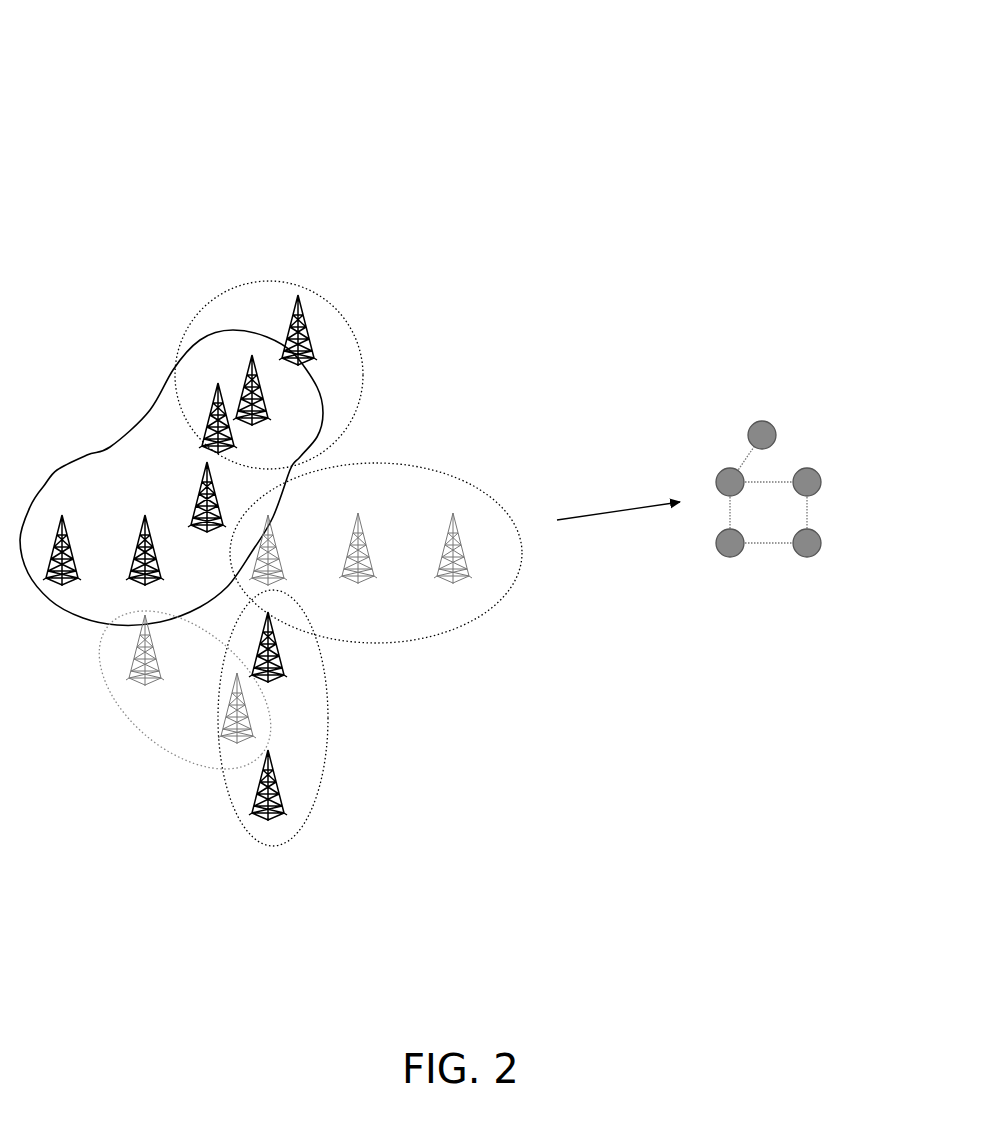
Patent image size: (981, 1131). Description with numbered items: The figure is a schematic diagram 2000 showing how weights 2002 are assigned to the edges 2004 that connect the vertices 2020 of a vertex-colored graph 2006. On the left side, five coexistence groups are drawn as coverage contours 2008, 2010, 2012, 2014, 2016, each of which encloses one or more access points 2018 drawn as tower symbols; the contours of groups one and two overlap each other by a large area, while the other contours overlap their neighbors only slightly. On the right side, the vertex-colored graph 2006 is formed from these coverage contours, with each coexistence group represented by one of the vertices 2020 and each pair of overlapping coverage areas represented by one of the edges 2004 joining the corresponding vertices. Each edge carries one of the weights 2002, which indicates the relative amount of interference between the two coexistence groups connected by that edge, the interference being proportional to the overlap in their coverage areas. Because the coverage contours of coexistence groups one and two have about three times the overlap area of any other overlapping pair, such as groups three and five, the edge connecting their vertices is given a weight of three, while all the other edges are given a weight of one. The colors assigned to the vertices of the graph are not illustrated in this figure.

The schematic diagram 2000 is at (158, 77).
The weights 2002 is at (725, 448).
The edges 2004 is at (757, 545).
The vertex-colored graph 2006 is at (783, 377).
The coverage contour 2008 is at (198, 315).
The coverage contour 2010 is at (88, 455).
The coverage contour 2012 is at (98, 650).
The coverage contour 2014 is at (422, 467).
The coverage contour 2016 is at (227, 792).
The access points 2018 is at (305, 333).
The vertices 2020 is at (717, 540).